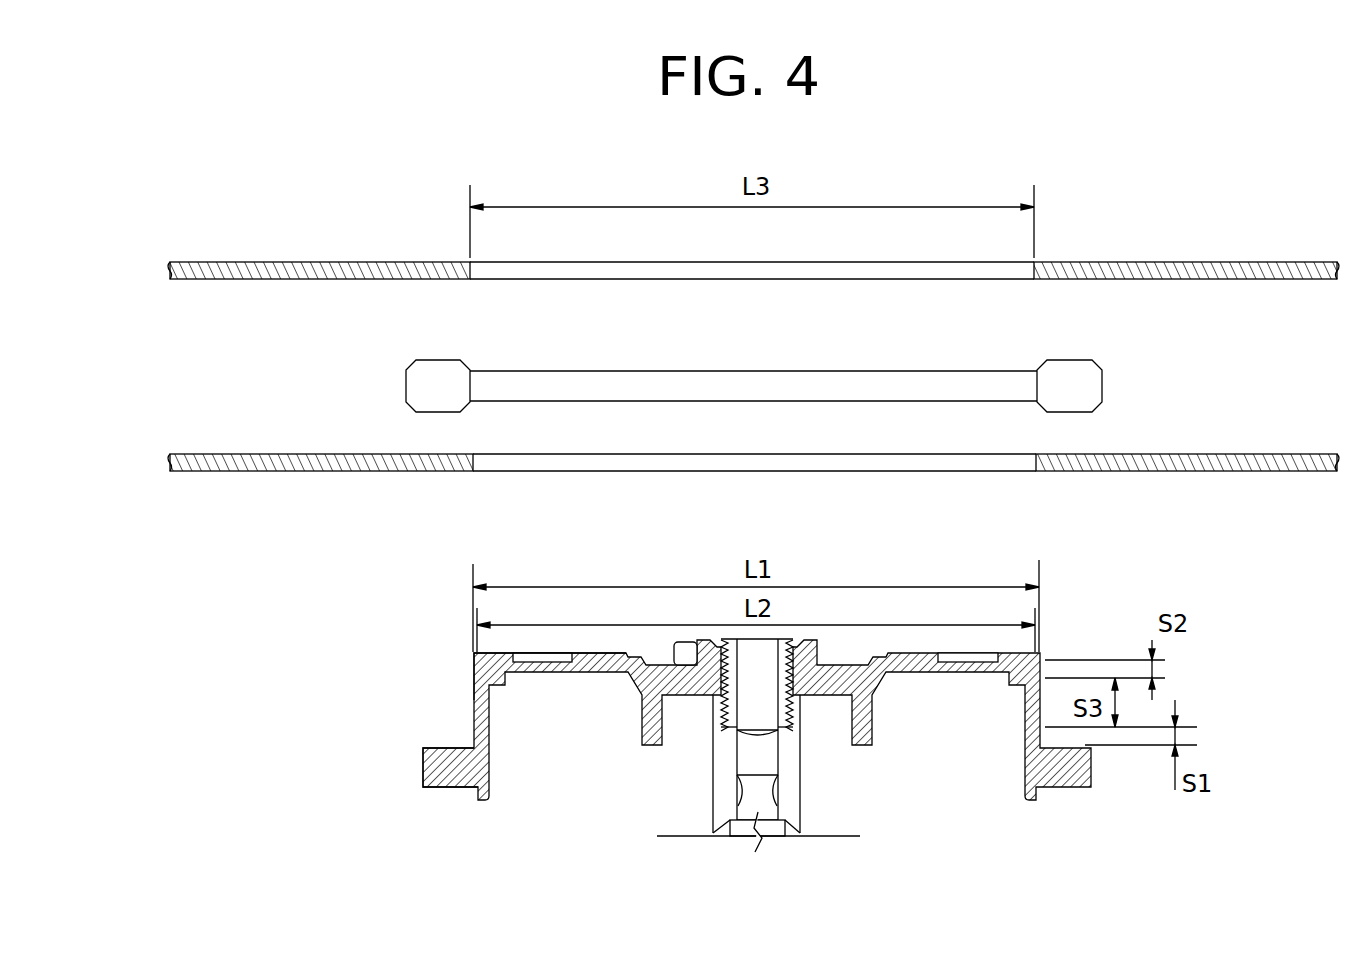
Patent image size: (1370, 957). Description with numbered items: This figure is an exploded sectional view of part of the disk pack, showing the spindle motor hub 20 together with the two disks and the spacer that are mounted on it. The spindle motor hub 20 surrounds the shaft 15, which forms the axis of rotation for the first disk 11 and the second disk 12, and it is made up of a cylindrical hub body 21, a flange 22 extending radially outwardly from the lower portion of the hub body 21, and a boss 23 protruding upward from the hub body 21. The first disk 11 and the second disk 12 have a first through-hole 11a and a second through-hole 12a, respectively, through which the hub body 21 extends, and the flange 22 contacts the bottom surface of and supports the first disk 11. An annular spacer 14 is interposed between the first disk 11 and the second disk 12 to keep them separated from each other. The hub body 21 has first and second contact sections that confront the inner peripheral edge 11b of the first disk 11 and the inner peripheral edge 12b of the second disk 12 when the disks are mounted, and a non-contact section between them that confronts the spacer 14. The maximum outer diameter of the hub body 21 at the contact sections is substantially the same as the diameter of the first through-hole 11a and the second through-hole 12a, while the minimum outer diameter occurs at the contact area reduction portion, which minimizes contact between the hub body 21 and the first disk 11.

The first disk 11 is at (753, 502).
The first through-hole 11a is at (535, 464).
The inner peripheral edge 11b is at (472, 462).
The second disk 12 is at (753, 261).
The second through-hole 12a is at (532, 272).
The inner peripheral edge 12b is at (470, 270).
The annular spacer 14 is at (422, 390).
The shaft 15 is at (748, 792).
The spindle motor hub 20 is at (719, 776).
The hub body 21 is at (474, 667).
The flange 22 is at (423, 770).
The boss 23 is at (677, 650).